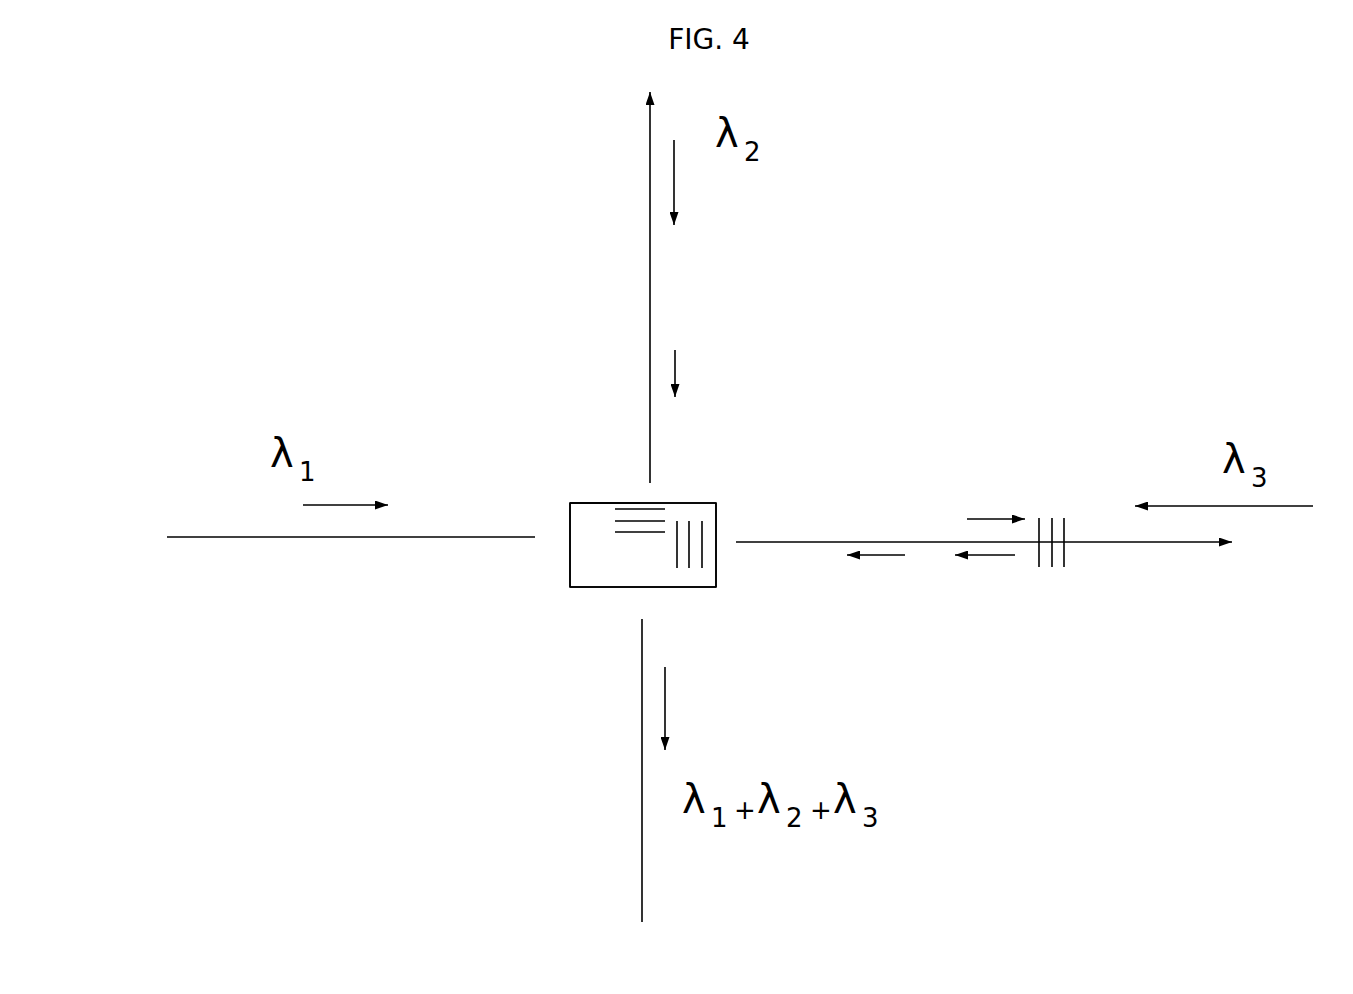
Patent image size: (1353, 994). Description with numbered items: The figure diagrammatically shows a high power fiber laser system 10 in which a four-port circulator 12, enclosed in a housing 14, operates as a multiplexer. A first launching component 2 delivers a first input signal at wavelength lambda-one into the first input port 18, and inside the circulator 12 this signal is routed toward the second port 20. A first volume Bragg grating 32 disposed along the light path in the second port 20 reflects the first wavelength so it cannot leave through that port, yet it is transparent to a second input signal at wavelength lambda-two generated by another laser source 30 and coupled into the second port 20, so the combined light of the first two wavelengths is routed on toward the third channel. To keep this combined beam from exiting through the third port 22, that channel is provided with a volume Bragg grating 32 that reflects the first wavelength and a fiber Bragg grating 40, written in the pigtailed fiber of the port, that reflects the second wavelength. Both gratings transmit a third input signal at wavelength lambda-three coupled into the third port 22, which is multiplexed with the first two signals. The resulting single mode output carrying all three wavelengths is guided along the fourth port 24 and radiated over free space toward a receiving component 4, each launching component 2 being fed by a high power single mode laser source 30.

The launching component 2 is at (638, 262).
The receiving component 4 is at (628, 705).
The high power fiber laser system 10 is at (919, 432).
The multi-port circulator 12 is at (590, 597).
The housing 14 is at (593, 509).
The first input port 18 is at (557, 547).
The second port 20 is at (638, 495).
The third port 22 is at (727, 530).
The fourth port 24 is at (653, 595).
The laser source 30 is at (588, 328).
The volume Bragg grating 32 is at (677, 527).
The fiber Bragg grating 40 is at (1015, 502).